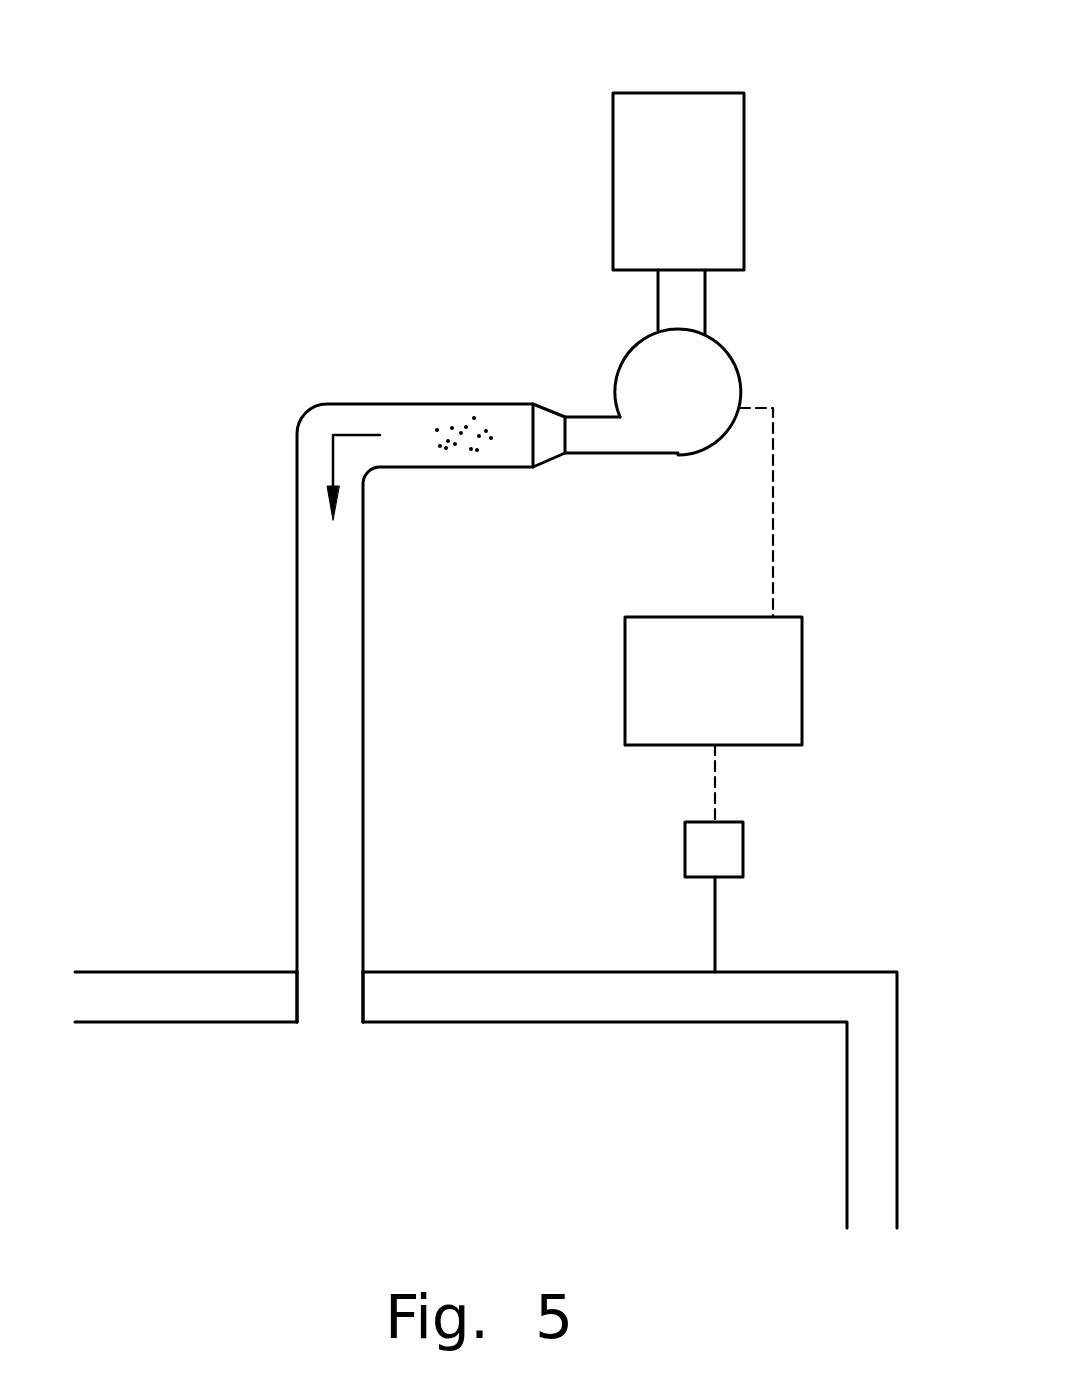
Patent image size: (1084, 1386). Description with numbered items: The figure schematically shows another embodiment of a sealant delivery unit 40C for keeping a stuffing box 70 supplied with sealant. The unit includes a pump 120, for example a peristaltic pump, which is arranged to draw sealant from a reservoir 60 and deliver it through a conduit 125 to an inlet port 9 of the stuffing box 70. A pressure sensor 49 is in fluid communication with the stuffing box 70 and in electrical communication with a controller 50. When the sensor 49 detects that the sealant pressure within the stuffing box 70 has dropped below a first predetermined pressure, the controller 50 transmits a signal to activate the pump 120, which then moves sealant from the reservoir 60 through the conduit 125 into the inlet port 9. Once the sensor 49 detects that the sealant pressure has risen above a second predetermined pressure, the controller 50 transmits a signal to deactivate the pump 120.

The reservoir 60 is at (675, 127).
The pump 120 is at (636, 405).
The sealant delivery unit 40C is at (772, 385).
The controller 50 is at (780, 688).
The pressure sensor 49 is at (723, 847).
The conduit 125 is at (320, 735).
The inlet port 9 is at (325, 1005).
The stuffing box 70 is at (525, 1090).